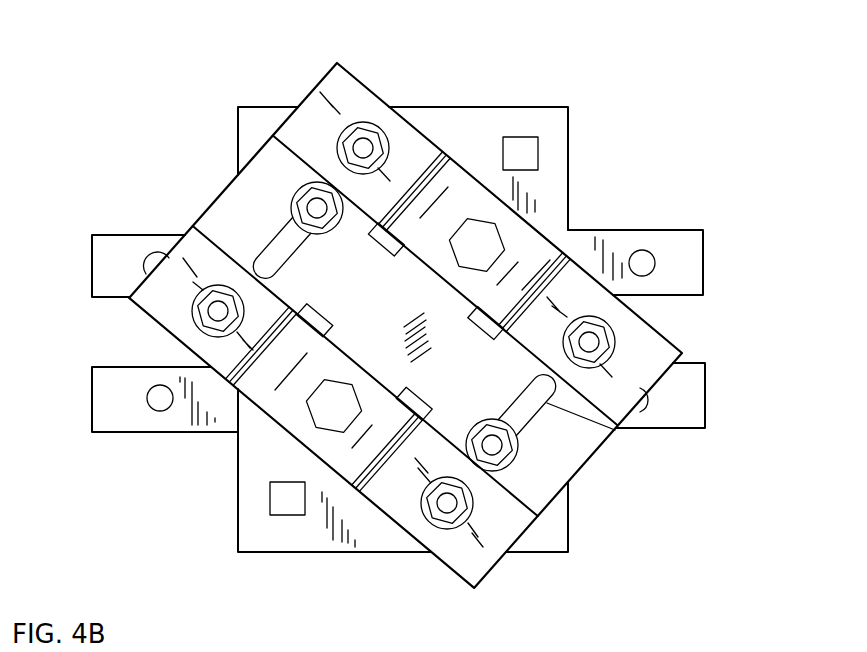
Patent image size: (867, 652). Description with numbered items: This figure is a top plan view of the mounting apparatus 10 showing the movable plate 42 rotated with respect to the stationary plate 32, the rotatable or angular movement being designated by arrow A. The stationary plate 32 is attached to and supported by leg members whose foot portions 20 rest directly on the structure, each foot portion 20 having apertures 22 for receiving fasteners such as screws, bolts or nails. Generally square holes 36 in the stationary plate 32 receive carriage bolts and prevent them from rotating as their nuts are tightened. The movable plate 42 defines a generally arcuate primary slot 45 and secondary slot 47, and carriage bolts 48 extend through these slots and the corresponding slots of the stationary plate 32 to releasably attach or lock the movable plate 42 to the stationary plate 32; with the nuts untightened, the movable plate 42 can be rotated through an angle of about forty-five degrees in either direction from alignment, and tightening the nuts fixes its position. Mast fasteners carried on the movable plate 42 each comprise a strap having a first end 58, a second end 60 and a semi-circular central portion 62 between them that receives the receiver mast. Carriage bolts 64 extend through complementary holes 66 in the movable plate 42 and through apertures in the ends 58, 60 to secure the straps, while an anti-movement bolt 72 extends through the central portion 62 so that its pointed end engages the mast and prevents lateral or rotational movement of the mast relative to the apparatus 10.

The apparatus 10 is at (481, 63).
The foot portions 20 is at (678, 237).
The apertures 22 is at (655, 263).
The stationary plate 32 is at (548, 186).
The holes 36 is at (328, 322).
The movable plate 42 is at (597, 463).
The primary slot 45 is at (272, 233).
The secondary slot 47 is at (580, 447).
The carriage bolts 48 is at (572, 492).
The first end 58 is at (331, 62).
The second end 60 is at (487, 582).
The central portion 62 is at (452, 170).
The carriage bolts 64 is at (366, 145).
The holes 66 is at (538, 155).
The bolt 72 is at (500, 235).
The arrow A is at (300, 20).